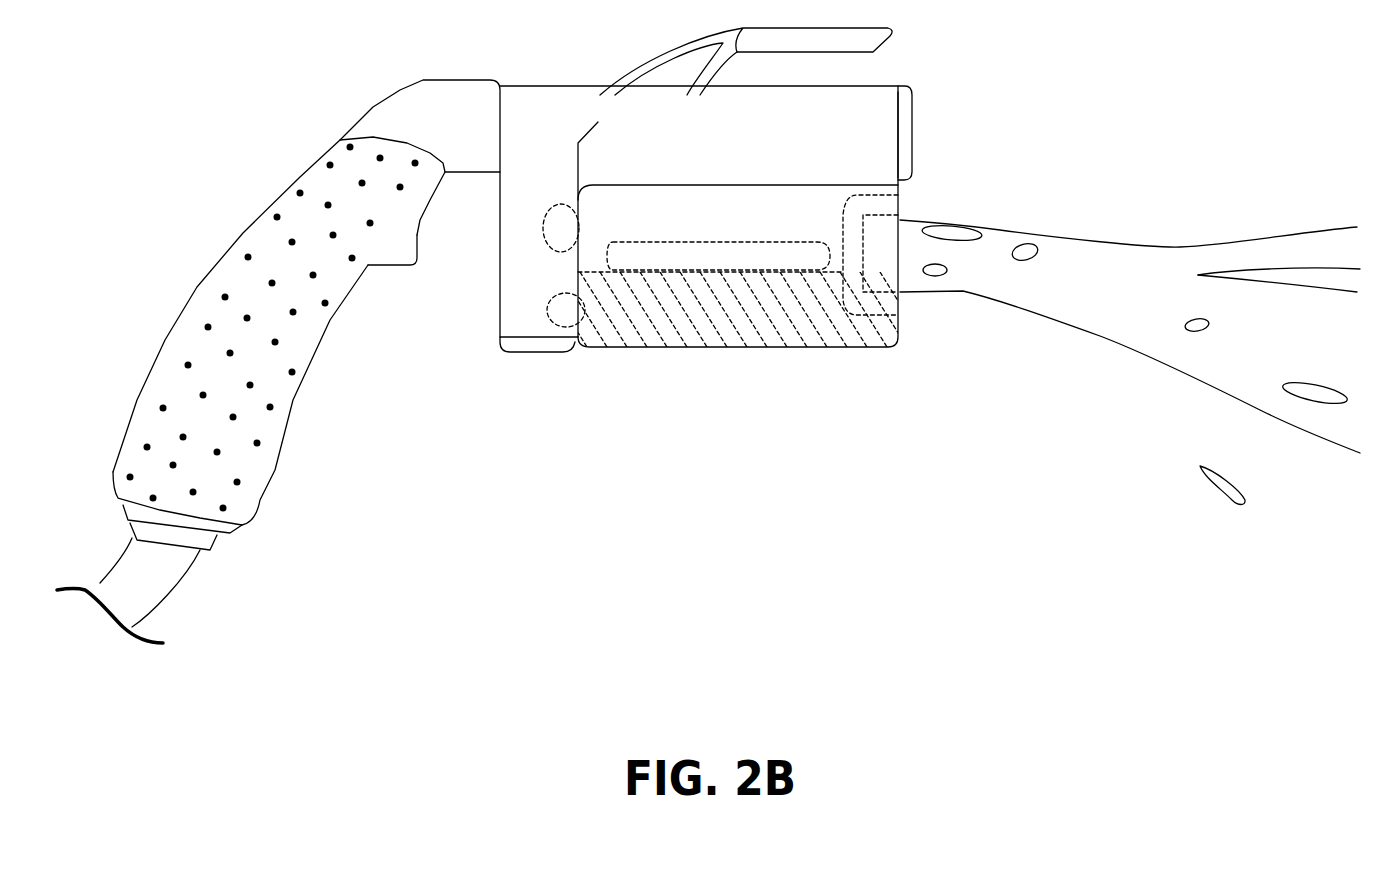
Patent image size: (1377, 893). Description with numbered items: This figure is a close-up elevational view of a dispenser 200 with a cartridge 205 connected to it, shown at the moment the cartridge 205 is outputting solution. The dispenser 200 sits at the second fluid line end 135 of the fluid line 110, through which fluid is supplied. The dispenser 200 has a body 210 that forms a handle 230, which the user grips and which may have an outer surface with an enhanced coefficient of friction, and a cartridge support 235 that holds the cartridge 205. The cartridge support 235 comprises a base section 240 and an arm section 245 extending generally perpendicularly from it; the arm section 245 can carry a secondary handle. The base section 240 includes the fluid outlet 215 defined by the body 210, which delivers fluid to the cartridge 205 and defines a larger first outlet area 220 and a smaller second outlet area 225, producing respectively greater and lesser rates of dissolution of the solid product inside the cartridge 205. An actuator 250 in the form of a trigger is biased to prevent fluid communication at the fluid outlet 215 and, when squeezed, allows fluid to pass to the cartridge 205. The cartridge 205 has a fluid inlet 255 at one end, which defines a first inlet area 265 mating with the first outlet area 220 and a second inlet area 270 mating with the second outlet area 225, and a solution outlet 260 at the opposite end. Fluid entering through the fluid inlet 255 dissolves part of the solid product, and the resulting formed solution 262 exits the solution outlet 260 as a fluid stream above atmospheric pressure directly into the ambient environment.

The fluid line 110 is at (108, 587).
The second fluid line end 135 is at (180, 585).
The dispenser 200 is at (374, 92).
The cartridge 205 is at (763, 358).
The body 210 is at (433, 107).
The fluid outlet 215 is at (595, 284).
The first outlet area 220 is at (550, 217).
The second outlet area 225 is at (550, 307).
The handle 230 is at (237, 285).
The cartridge support 235 is at (577, 87).
The base section 240 is at (558, 127).
The arm section 245 is at (887, 135).
The actuator 250 is at (383, 260).
The fluid inlet 255 is at (592, 255).
The solution outlet 260 is at (890, 213).
The formed solution 262 is at (1032, 307).
The first inlet area 265 is at (557, 232).
The second inlet area 270 is at (560, 312).